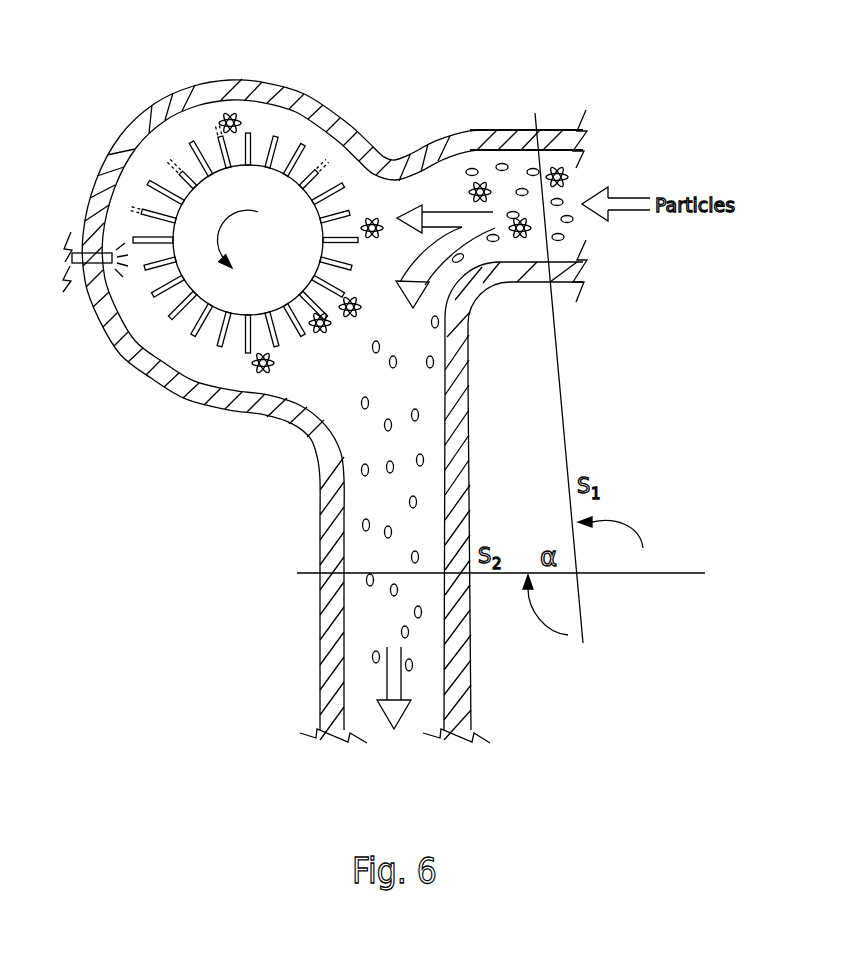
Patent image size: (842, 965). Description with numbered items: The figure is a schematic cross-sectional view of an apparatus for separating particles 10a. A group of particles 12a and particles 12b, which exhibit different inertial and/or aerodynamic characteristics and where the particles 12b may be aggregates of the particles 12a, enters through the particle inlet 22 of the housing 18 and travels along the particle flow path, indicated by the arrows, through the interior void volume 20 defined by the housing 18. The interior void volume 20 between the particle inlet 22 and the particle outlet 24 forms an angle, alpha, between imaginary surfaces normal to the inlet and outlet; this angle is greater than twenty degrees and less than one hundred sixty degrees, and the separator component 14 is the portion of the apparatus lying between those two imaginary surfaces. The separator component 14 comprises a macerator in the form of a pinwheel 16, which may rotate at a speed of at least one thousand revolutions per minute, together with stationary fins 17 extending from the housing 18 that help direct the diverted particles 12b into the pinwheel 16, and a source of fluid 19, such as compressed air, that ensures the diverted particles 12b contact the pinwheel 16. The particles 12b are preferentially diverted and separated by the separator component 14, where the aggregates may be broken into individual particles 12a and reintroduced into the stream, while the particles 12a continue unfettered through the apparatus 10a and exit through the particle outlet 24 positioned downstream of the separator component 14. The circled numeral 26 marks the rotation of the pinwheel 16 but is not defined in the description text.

The apparatus for separating particles 10a is at (490, 70).
The particles 12a is at (367, 352).
The particles 12b is at (229, 112).
The separator component 14 is at (152, 327).
The pinwheel 16 is at (277, 187).
The fins 17 is at (168, 208).
The housing 18 is at (450, 532).
The source of fluid 19 is at (82, 265).
The interior void volume 20 is at (432, 408).
The particle inlet 22 is at (600, 170).
The particle outlet 24 is at (400, 754).
The rotation direction 26 is at (243, 239).